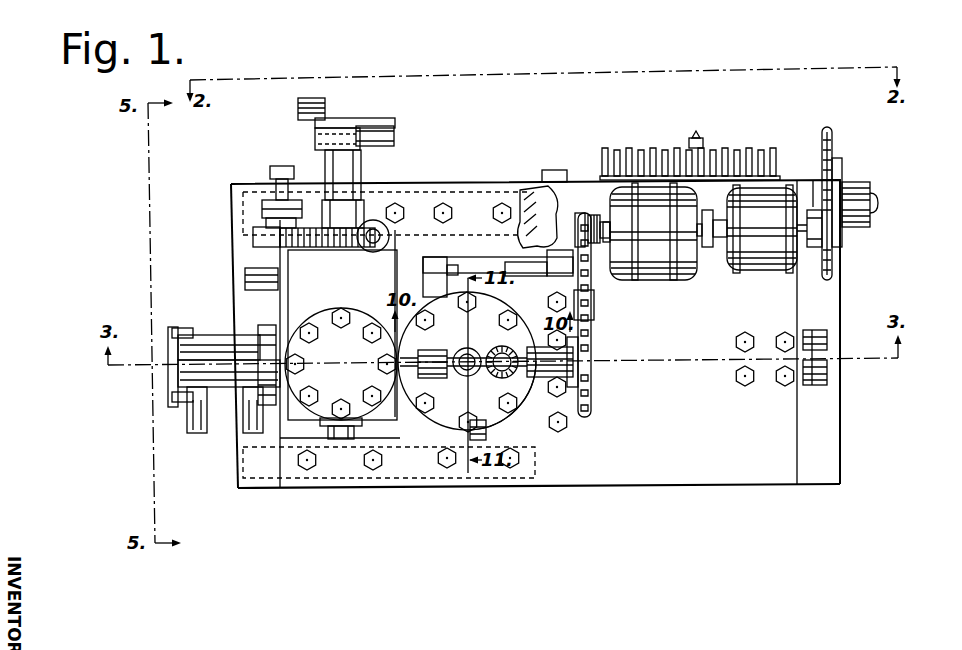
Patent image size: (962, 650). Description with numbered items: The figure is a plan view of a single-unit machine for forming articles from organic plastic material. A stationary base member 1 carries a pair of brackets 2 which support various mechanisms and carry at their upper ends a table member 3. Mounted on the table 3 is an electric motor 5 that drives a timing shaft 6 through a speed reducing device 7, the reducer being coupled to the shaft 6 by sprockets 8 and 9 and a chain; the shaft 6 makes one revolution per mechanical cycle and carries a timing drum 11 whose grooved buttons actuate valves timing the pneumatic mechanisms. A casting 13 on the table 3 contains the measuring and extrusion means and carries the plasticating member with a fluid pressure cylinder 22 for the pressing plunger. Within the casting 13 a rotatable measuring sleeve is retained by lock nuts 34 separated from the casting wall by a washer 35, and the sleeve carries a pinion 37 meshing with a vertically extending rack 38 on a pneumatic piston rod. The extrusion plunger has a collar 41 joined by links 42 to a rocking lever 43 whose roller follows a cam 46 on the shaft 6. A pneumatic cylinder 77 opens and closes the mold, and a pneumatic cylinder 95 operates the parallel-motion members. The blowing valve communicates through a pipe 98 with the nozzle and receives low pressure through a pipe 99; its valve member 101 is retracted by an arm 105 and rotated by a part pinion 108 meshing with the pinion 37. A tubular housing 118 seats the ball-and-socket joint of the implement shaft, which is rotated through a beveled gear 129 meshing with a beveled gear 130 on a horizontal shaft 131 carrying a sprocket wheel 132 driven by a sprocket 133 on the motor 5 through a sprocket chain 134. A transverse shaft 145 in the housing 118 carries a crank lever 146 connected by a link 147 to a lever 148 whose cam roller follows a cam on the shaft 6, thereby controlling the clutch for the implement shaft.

The stationary base member 1 is at (827, 453).
The brackets 2 is at (242, 195).
The table member 3 is at (748, 473).
The electric motor 5 is at (670, 277).
The timing shaft 6 is at (876, 195).
The speed reducing device 7 is at (760, 268).
The sprocket 8 is at (840, 232).
The sprocket 9 is at (832, 137).
The timing drum 11 is at (737, 147).
The casting 13 is at (378, 280).
The fluid pressure cylinder 22 is at (329, 335).
The lock nuts 34 is at (347, 441).
The washer 35 is at (327, 428).
The pinion 37 is at (341, 198).
The rack 38 is at (387, 223).
The collar 41 is at (353, 193).
The links 42 is at (318, 185).
The rocking lever 43 is at (340, 118).
The cam 46 is at (305, 122).
The pneumatic cylinder 77 is at (217, 337).
The pneumatic cylinder 95 is at (823, 332).
The pipe 98 is at (257, 337).
The low pressure pipe 99 is at (247, 275).
The valve member 101 is at (262, 208).
The arm 105 is at (307, 187).
The part pinion 108 is at (263, 240).
The tubular housing 118 is at (445, 419).
The beveled gear 129 is at (497, 340).
The beveled gear 130 is at (537, 407).
The horizontal shaft 131 is at (455, 377).
The sprocket wheel 132 is at (593, 387).
The sprocket 133 is at (580, 213).
The sprocket chain 134 is at (592, 280).
The transverse shaft 145 is at (507, 257).
The crank lever 146 is at (455, 295).
The link 147 is at (510, 260).
The lever 148 is at (585, 306).